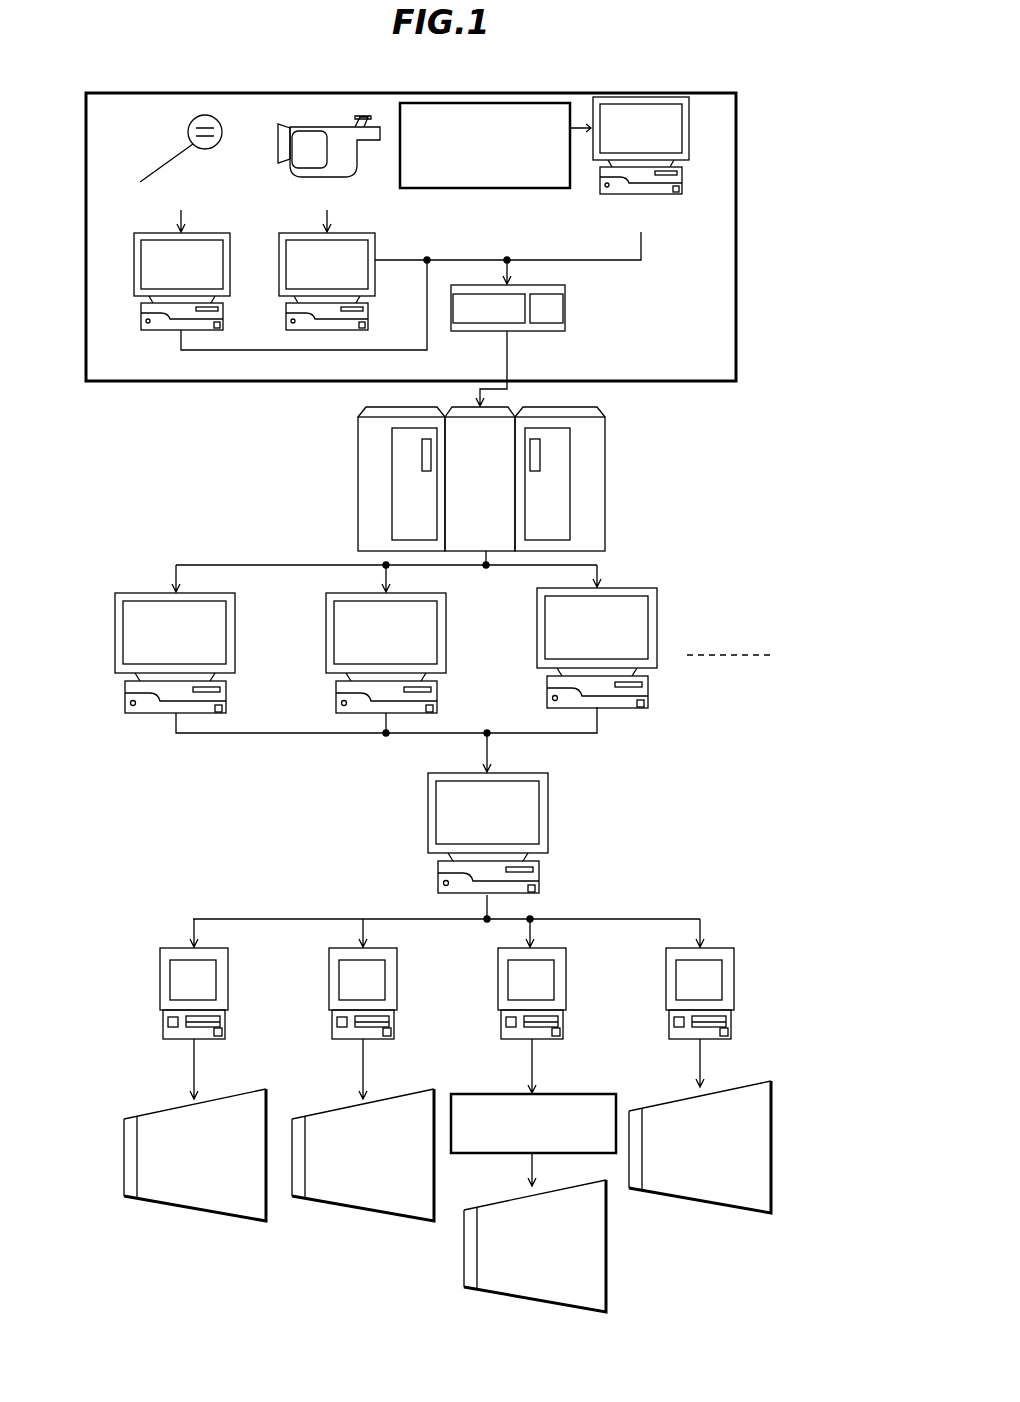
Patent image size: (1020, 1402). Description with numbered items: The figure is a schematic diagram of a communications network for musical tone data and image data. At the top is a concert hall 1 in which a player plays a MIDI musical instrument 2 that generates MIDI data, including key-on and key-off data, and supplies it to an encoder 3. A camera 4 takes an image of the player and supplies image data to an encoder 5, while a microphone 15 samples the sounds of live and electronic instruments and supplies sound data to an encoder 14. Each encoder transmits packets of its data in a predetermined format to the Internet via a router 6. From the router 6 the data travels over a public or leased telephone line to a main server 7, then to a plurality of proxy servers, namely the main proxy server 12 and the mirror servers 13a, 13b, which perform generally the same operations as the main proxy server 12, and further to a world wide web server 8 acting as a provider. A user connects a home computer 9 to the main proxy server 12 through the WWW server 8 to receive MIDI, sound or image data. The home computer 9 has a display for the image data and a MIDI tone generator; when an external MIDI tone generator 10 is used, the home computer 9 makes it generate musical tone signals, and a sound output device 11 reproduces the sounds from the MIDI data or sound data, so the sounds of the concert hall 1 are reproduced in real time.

The concert hall 1 is at (736, 323).
The MIDI musical instrument 2 is at (400, 150).
The encoder 3 is at (689, 132).
The camera 4 is at (317, 125).
The encoder 5 is at (375, 258).
The router 6 is at (565, 310).
The main server 7 is at (605, 437).
The world wide web server 8 is at (428, 812).
The home computer 9 is at (160, 975).
The external MIDI tone generator 10 is at (500, 1156).
The sound output device 11 is at (170, 1208).
The main proxy server 12 is at (115, 625).
The mirror server 13a is at (326, 625).
The mirror server 13b is at (537, 620).
The encoder 14 is at (252, 248).
The microphone 15 is at (188, 132).